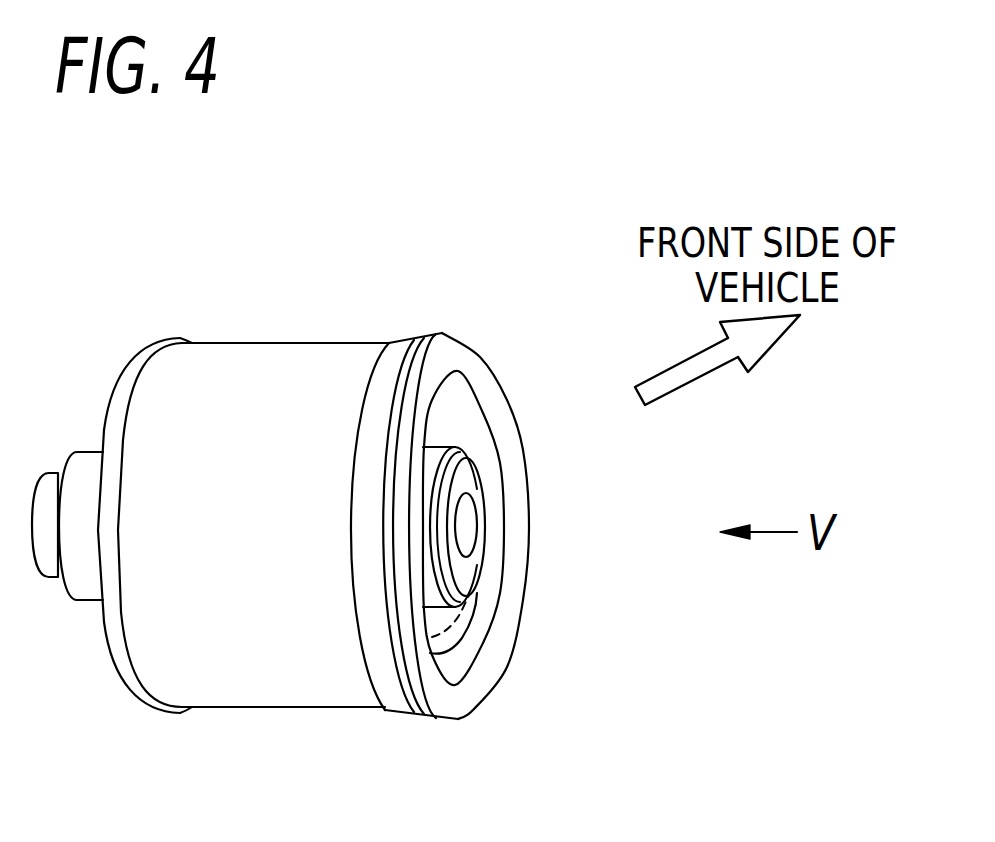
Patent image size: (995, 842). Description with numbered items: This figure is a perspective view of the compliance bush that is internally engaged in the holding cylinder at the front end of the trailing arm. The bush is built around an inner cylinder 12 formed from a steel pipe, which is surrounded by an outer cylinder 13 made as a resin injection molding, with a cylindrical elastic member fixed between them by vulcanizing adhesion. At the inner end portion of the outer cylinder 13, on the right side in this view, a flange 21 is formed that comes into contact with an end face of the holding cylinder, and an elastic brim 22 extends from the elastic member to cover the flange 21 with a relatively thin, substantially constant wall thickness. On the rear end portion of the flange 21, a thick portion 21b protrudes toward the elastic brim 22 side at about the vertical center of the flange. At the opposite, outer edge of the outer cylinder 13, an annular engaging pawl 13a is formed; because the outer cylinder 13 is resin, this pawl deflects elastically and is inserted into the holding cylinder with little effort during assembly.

The inner cylinder 12 is at (482, 561).
The outer cylinder 13 is at (253, 357).
The annular engaging pawl 13a is at (132, 372).
The flange 21 is at (340, 499).
The thick portion 21b is at (363, 523).
The elastic brim 22 is at (485, 368).